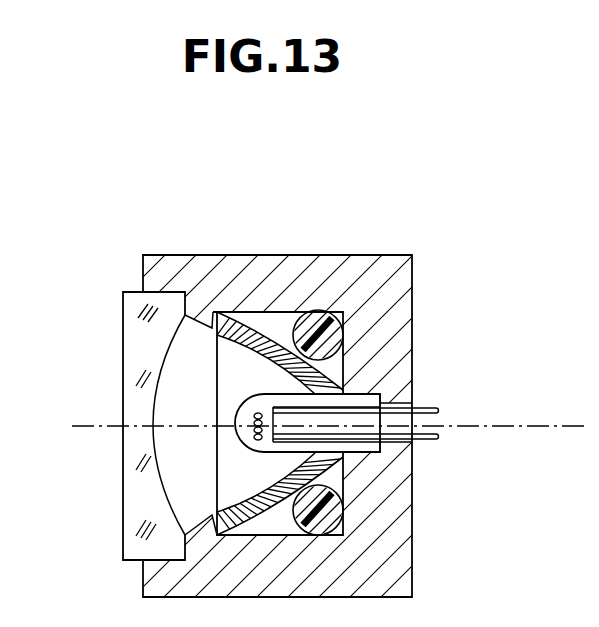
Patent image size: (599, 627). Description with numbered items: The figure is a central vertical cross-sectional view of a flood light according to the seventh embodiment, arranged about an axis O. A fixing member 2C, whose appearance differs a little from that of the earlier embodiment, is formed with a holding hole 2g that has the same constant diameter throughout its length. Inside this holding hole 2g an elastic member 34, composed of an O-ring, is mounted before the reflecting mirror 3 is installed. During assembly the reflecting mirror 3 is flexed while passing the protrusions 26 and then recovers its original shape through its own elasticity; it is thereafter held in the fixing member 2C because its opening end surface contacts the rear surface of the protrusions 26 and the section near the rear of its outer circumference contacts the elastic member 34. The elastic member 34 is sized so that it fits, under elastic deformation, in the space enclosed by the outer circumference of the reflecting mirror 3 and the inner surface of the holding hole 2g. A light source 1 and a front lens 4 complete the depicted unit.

The light emitting element (LED) 1 is at (366, 402).
The fixing member 2C is at (303, 288).
The holding hole 2g is at (267, 312).
The reflecting mirror 3 is at (243, 325).
The cover lens 4 is at (135, 322).
The protrusions 26 is at (183, 314).
The elastic member 34 is at (323, 337).
The optical axis O is at (98, 427).